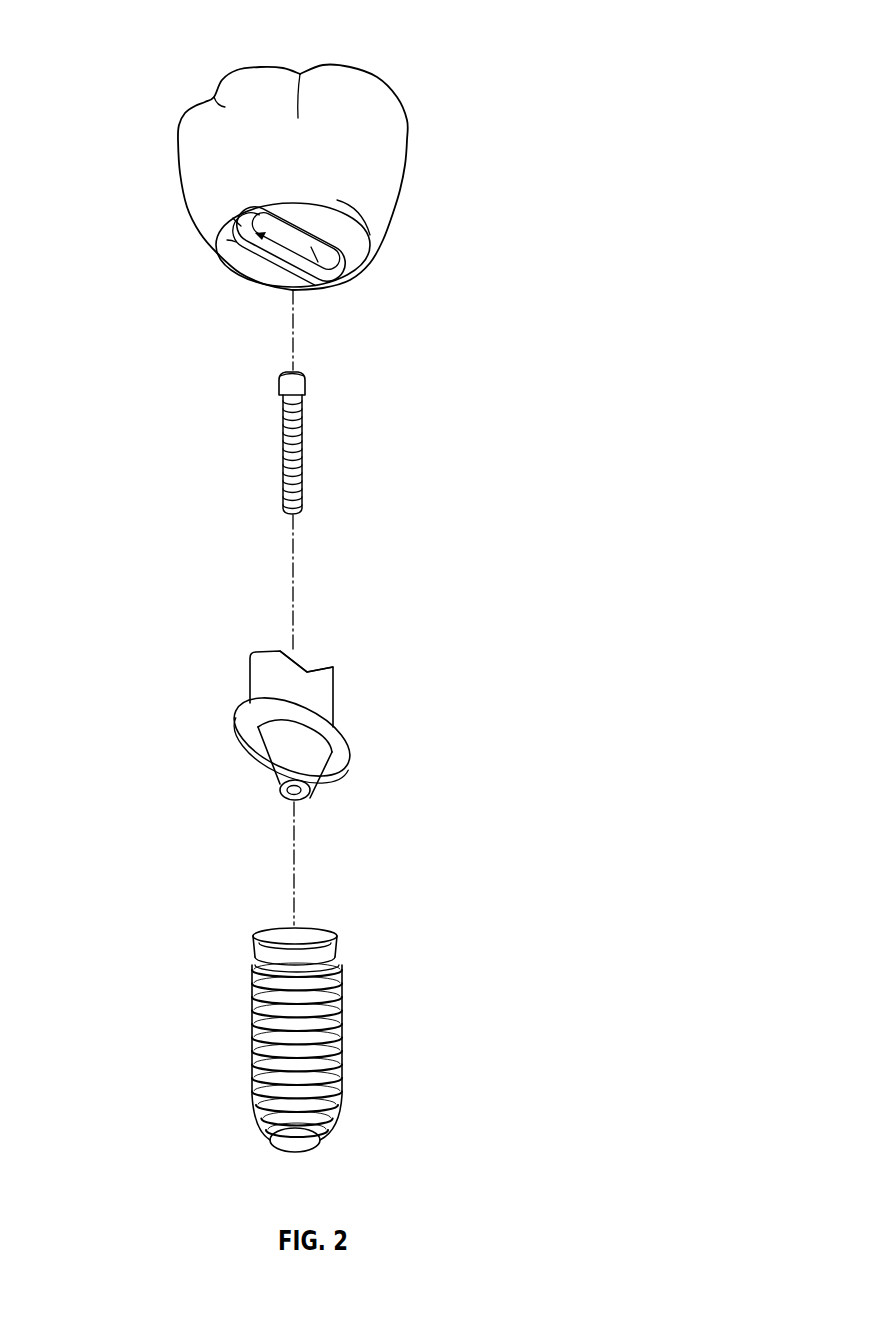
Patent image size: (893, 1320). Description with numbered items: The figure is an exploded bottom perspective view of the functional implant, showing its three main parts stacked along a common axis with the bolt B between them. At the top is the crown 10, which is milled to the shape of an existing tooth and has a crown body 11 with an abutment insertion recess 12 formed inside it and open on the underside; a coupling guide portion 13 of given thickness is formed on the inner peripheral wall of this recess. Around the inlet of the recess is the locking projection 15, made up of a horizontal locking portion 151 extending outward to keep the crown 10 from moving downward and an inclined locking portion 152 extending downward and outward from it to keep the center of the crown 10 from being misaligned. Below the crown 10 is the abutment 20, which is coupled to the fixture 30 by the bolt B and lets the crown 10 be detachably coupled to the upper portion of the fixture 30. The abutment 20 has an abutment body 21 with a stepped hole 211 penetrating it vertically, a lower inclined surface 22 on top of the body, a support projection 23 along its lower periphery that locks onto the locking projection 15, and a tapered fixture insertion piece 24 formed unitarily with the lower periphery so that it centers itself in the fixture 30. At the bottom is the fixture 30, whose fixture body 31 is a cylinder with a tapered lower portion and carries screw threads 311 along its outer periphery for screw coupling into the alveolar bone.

The crown 10 is at (414, 76).
The crown body 11 is at (383, 152).
The abutment insertion recess 12 is at (366, 270).
The coupling guide portion 13 is at (251, 242).
The locking projection 15 is at (85, 163).
The horizontal locking portion 151 is at (233, 218).
The inclined locking portion 152 is at (227, 240).
The bolt B is at (333, 450).
The abutment 20 is at (373, 696).
The abutment body 21 is at (270, 675).
The lower inclined surface 22 is at (282, 653).
The support projection 23 is at (248, 708).
The tapered fixture insertion piece 24 is at (287, 764).
The stepped hole 211 is at (308, 801).
The fixture 30 is at (373, 1015).
The fixture body 31 is at (255, 1068).
The screw threads 311 is at (253, 1027).